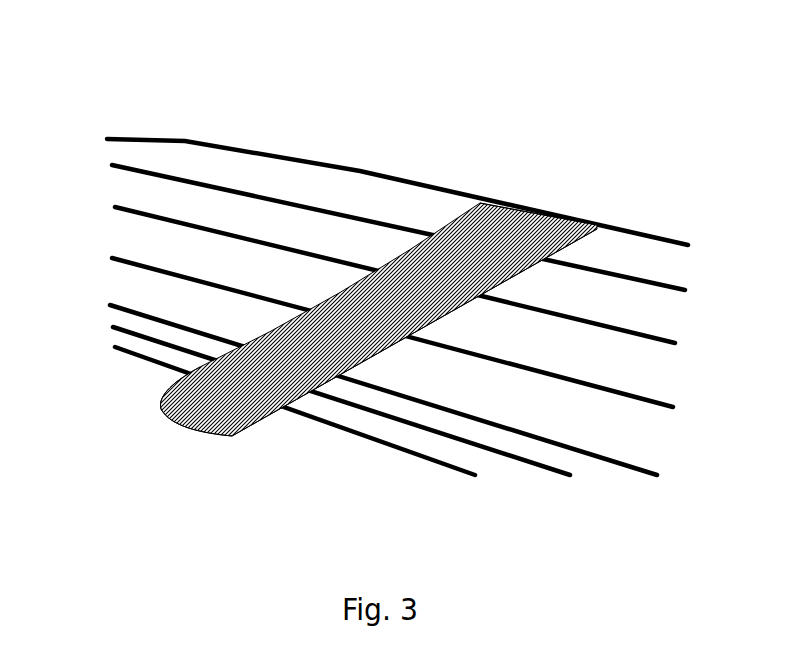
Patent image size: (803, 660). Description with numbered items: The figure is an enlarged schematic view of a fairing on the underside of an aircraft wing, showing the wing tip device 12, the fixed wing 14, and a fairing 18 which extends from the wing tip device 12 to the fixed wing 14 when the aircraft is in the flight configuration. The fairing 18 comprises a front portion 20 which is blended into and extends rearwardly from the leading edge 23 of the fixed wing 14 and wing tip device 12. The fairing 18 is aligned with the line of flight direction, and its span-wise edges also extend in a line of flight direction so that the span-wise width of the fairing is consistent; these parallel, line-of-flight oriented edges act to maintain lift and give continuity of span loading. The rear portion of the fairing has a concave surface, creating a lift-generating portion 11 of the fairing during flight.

The lift-generating portion 11 is at (172, 414).
The wing tip device 12 is at (198, 197).
The fixed wing 14 is at (588, 302).
The fairing 18 is at (365, 338).
The front portion 20 is at (323, 299).
The leading edge 23 is at (520, 207).